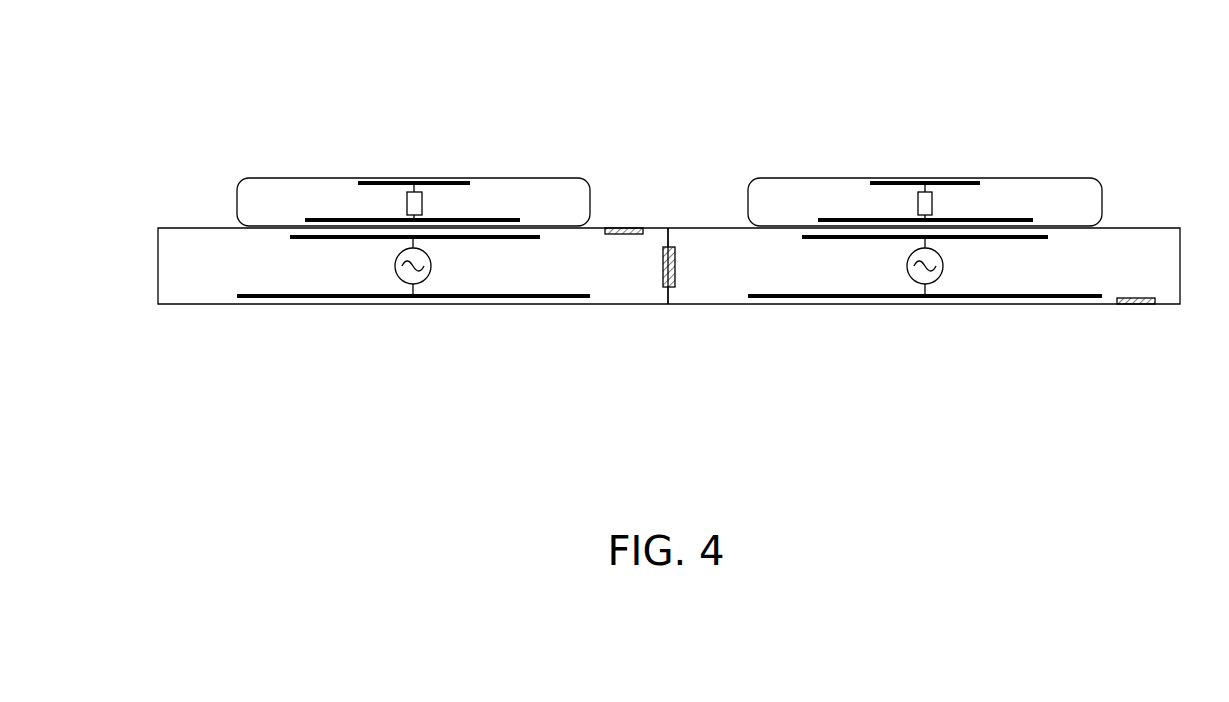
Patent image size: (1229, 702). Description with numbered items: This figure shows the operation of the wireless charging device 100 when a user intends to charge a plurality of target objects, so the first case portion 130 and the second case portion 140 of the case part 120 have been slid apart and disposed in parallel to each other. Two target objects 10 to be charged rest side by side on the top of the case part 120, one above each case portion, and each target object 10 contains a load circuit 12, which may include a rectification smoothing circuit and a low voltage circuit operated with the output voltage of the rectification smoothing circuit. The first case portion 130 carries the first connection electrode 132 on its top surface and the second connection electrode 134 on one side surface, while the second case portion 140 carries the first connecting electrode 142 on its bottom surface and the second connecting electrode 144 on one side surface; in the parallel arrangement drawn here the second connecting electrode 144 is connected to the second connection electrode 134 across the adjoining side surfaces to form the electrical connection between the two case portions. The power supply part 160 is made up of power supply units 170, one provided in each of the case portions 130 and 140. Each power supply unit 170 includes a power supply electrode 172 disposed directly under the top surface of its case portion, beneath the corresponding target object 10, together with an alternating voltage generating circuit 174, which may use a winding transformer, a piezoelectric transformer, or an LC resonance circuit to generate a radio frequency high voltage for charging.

The wireless charging device 100 is at (300, 62).
The target object 10 is at (248, 193).
The load circuit 12 is at (406, 203).
The case part 120 is at (715, 108).
The first case portion 130 is at (655, 240).
The second case portion 140 is at (715, 240).
The first connection electrode 132 is at (623, 228).
The second connection electrode 134 is at (662, 264).
The first connecting electrode 142 is at (1133, 304).
The second connecting electrode 144 is at (676, 262).
The power supply part 160 is at (472, 444).
The power supply unit 170 is at (437, 399).
The power supply electrode 172 is at (458, 304).
The alternating voltage generating circuit 174 is at (433, 266).